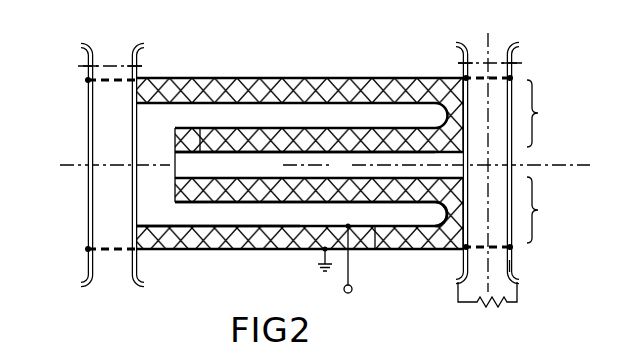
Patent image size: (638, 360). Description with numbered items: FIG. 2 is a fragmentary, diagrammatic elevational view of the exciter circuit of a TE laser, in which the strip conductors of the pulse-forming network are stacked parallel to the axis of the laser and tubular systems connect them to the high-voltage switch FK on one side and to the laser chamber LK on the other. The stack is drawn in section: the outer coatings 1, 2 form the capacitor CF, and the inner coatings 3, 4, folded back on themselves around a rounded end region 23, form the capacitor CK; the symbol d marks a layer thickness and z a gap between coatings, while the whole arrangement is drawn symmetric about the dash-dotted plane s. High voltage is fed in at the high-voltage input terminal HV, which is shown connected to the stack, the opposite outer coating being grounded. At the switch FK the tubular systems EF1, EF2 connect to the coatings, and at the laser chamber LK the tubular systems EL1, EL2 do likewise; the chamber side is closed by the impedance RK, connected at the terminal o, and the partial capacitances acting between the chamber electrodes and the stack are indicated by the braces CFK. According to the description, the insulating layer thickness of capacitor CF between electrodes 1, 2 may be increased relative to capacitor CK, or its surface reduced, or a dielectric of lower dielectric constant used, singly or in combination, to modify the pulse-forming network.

The coating of capacitor CF 1 is at (152, 250).
The coating of capacitor CF 2 is at (167, 226).
The coating of capacitor CK 3 is at (287, 202).
The coating of capacitor CK 4 is at (329, 152).
The rounded end of electrode 23 is at (440, 212).
The layer thickness d is at (207, 156).
The gap z is at (183, 165).
The plane of symmetry s is at (56, 168).
The connection point o is at (512, 267).
The capacitor CK is at (237, 177).
The capacitor CF is at (232, 238).
The high-voltage input terminal HV is at (344, 275).
The switch FK is at (111, 194).
The laser chamber LK is at (491, 150).
The filter electrode 1 EF1 is at (89, 143).
The filter electrode 2 EF2 is at (136, 160).
The coupling electrode 1 EL1 is at (462, 59).
The coupling electrode 2 EL2 is at (513, 56).
The impedance RK is at (481, 305).
The partial capacitance CFK is at (558, 161).